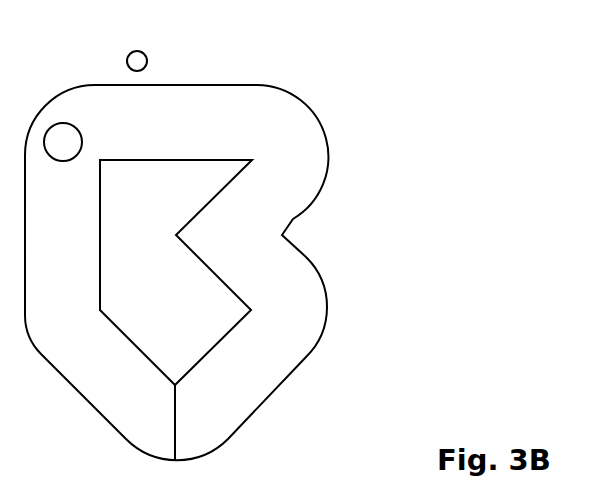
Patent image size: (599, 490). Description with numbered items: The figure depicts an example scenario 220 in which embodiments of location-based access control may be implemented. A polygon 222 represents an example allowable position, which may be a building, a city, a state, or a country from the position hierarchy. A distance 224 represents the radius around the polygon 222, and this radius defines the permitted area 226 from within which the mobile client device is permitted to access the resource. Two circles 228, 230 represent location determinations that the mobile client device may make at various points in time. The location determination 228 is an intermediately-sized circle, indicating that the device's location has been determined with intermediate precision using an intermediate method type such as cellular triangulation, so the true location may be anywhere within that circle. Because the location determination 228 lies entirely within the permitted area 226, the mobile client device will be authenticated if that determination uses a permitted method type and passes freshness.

The example scenario 220 is at (462, 70).
The polygon 222 is at (168, 160).
The distance 224 is at (177, 412).
The permitted area 226 is at (320, 128).
The location determination 228 is at (76, 128).
The location determination 230 is at (146, 55).